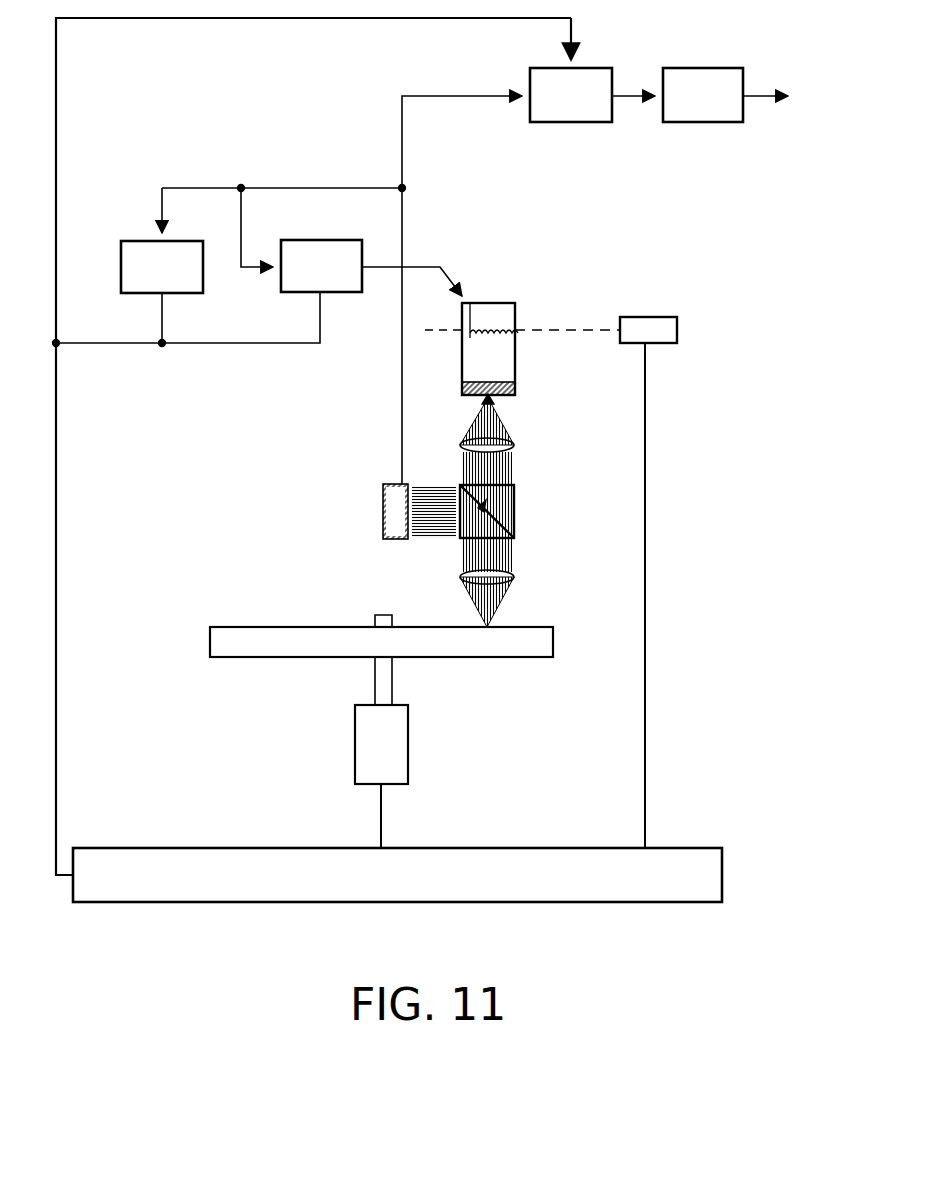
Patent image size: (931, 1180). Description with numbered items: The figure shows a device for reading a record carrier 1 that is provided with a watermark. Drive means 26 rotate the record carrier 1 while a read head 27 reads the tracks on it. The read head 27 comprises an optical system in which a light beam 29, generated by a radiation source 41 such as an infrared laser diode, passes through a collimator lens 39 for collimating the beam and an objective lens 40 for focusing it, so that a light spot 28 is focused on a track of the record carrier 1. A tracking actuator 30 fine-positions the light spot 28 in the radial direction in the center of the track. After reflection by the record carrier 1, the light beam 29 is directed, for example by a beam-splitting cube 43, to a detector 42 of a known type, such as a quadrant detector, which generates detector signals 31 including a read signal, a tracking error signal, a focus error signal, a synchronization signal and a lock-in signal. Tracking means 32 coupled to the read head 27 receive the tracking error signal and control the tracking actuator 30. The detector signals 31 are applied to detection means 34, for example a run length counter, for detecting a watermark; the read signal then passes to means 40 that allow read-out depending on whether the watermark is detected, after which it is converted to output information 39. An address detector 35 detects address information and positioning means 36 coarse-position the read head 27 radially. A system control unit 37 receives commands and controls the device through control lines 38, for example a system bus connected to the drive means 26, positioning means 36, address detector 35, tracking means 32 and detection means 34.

The record carrier 1 is at (252, 627).
The drive means 26 is at (408, 762).
The read head 27 is at (496, 302).
The light spot 28 is at (480, 622).
The light beam 29 is at (508, 418).
The tracking actuator 30 is at (462, 340).
The detector signals 31 is at (403, 228).
The tracking means 32 is at (338, 292).
The detection means 34 is at (572, 122).
The address detector 35 is at (131, 240).
The positioning means 36 is at (677, 330).
The system control unit 37 is at (605, 903).
The control lines 38 is at (57, 115).
The collimator lens 39 is at (768, 96).
The objective lens 40 is at (708, 122).
The radiation source 41 is at (517, 391).
The detector 42 is at (384, 506).
The beam-splitting cube 43 is at (514, 505).